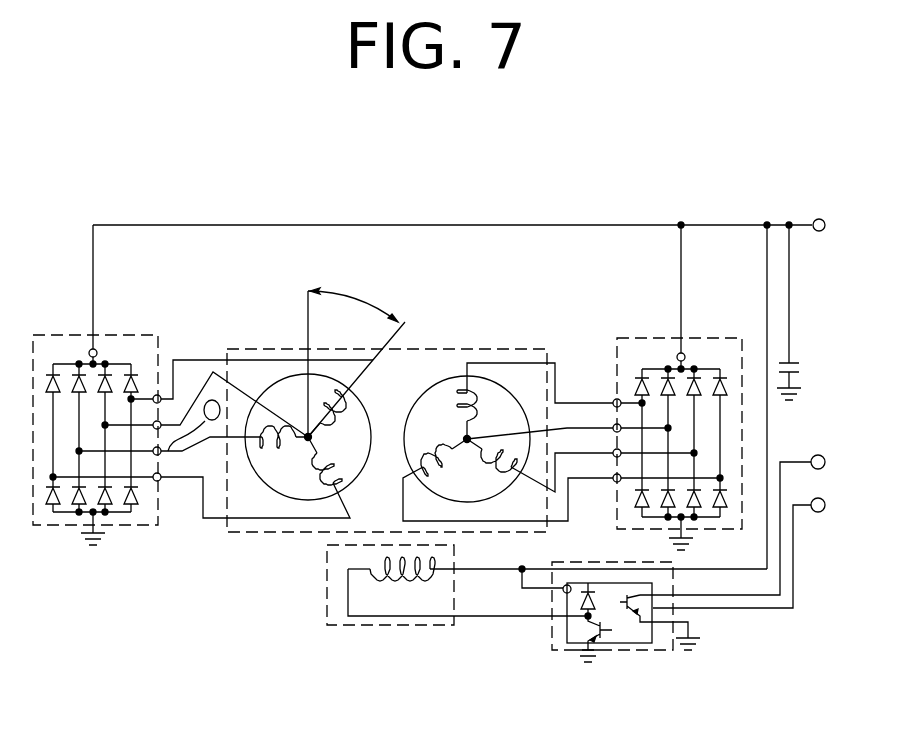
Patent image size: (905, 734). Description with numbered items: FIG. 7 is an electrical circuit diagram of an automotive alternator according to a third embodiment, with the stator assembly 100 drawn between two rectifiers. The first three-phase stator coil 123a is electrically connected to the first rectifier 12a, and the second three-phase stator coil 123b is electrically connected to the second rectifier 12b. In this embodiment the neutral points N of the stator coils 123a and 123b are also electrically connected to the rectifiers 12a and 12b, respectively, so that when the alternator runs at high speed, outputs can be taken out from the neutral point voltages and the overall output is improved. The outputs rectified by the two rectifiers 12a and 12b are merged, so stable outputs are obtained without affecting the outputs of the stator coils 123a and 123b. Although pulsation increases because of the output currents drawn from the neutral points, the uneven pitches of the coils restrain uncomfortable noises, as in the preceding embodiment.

The first rectifier 12a is at (132, 333).
The second rectifier 12b is at (673, 335).
The permanent magnet motor 100 is at (358, 434).
The first stator coil 123a is at (263, 445).
The second stator coil 123b is at (487, 395).